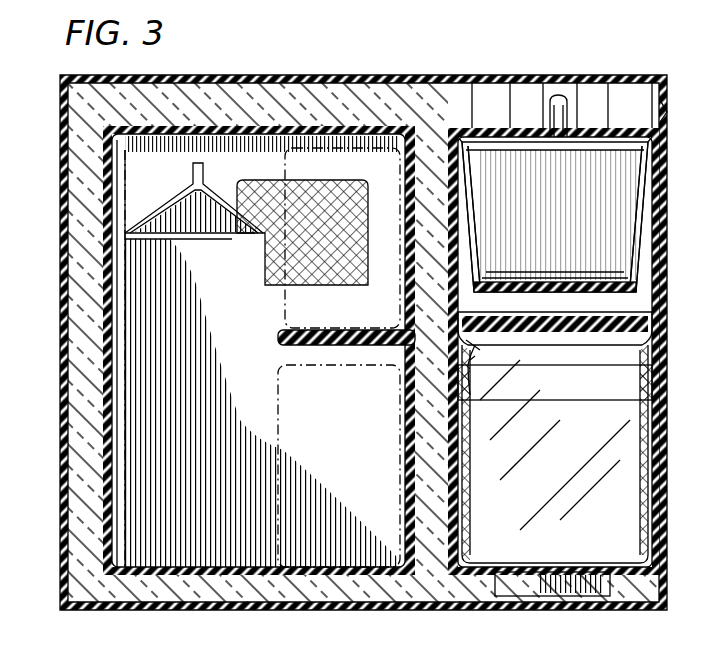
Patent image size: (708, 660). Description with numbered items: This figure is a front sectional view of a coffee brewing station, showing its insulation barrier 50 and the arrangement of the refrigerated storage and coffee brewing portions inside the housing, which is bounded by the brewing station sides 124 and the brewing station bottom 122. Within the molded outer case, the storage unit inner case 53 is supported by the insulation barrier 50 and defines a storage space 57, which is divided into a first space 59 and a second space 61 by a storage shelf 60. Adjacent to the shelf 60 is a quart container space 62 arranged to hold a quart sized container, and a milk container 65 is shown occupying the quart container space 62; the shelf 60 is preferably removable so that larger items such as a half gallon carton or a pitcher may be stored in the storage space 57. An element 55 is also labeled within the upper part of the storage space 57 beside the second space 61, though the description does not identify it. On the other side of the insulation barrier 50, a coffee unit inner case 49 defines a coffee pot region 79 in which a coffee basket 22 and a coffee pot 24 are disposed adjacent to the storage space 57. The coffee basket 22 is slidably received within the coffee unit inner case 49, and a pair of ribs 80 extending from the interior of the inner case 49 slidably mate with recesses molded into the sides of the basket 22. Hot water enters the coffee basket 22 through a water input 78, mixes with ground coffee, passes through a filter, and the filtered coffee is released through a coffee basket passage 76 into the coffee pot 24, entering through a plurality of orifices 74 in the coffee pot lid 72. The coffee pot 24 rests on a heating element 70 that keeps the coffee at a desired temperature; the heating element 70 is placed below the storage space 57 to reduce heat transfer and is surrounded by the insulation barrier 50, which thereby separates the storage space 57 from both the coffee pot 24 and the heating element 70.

The coffee unit inner case 49 is at (445, 130).
The insulation barrier 50 is at (70, 542).
The brewing station sides 124 is at (62, 465).
The brewing station bottom 122 is at (224, 609).
The quart container space 62 is at (170, 194).
The filter block 55 is at (262, 179).
The second space 61 is at (333, 152).
The storage shelf 60 is at (350, 330).
The first space 59 is at (328, 365).
The storage space 57 is at (360, 454).
The milk container 65 is at (124, 490).
The storage unit inner case 53 is at (138, 560).
The ribs 80 is at (478, 150).
The water input 78 is at (566, 140).
The coffee basket 22 is at (565, 242).
The coffee pot region 79 is at (548, 303).
The coffee basket passage 76 is at (558, 285).
The orifices 74 is at (522, 345).
The coffee pot lid 72 is at (586, 340).
The coffee pot 24 is at (570, 484).
The heating element 70 is at (533, 580).